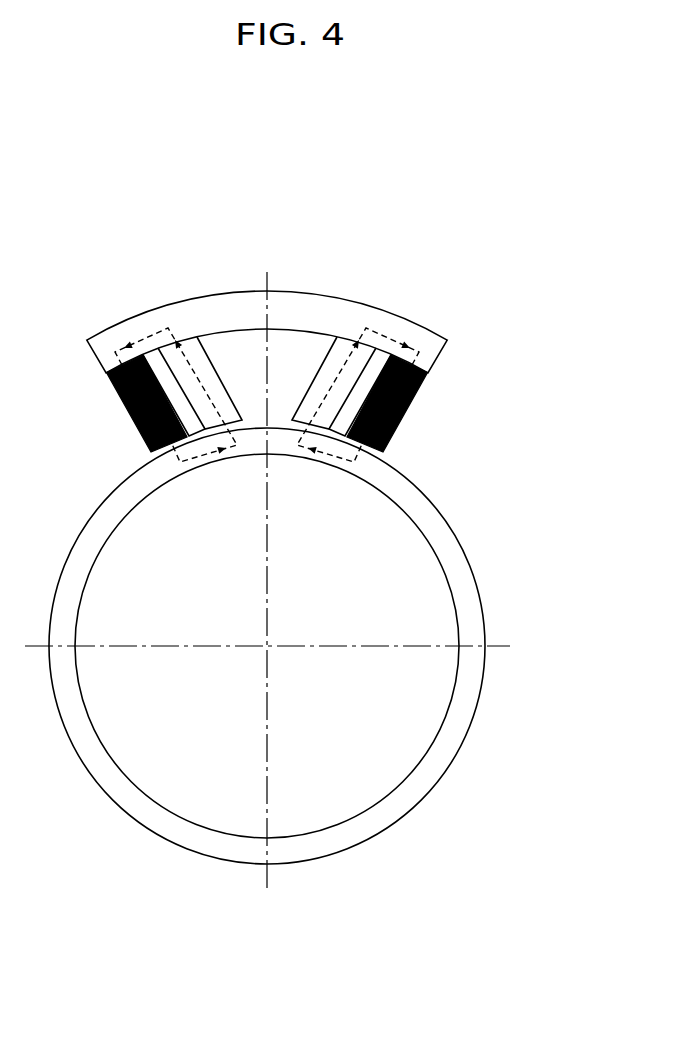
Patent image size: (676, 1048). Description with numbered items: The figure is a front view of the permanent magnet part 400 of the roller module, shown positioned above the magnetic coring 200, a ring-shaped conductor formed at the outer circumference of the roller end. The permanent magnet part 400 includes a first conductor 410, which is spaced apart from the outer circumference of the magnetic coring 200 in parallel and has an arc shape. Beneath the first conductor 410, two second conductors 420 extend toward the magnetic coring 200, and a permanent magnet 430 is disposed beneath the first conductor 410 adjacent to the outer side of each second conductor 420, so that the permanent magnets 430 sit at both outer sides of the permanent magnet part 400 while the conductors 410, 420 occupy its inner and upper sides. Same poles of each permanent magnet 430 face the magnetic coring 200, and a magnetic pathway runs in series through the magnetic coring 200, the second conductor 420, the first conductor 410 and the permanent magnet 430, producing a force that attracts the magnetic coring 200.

The magnetic coring 200 is at (478, 564).
The permanent magnet part 400 is at (290, 288).
The first conductor 410 is at (405, 319).
The second conductor 420 is at (206, 372).
The permanent magnet 430 is at (405, 406).